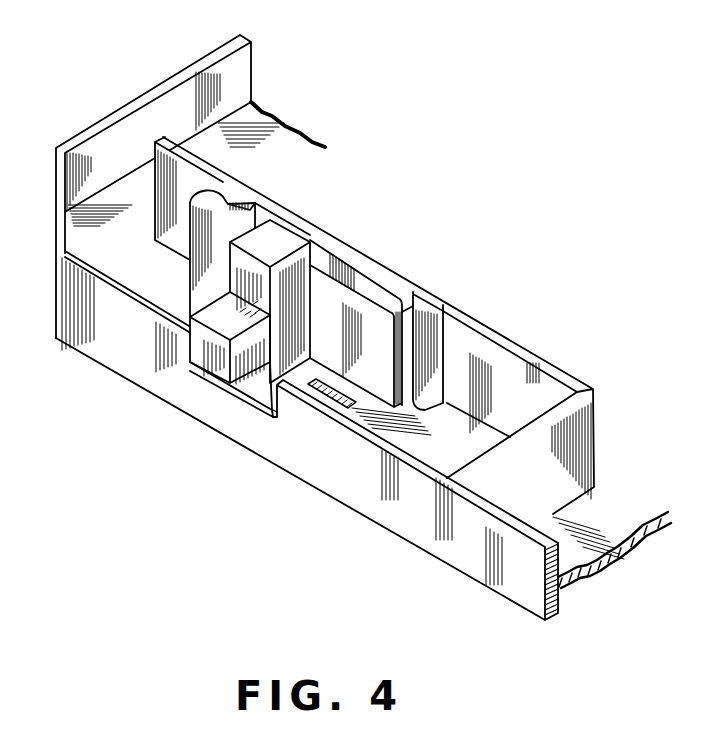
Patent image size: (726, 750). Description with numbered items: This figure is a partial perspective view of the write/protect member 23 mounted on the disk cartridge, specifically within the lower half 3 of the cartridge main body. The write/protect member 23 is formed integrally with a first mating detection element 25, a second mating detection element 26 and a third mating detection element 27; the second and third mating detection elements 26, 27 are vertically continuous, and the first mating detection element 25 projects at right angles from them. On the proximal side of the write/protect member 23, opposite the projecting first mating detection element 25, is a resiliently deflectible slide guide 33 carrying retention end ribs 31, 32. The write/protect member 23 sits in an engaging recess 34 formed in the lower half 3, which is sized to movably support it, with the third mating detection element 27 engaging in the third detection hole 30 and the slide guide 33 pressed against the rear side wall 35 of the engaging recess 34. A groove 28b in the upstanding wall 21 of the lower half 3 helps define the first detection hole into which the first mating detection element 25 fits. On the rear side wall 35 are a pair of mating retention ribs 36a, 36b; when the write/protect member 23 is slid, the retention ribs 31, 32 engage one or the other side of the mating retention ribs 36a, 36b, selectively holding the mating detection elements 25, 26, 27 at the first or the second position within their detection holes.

The lower half 3 is at (152, 120).
The upstanding wall 21 is at (112, 340).
The write/protect member 23 is at (243, 272).
The first mating detection element 25 is at (205, 356).
The second mating detection element 26 is at (272, 248).
The third mating detection element 27 is at (280, 370).
The groove 28b is at (258, 417).
The third detection hole 30 is at (330, 407).
The retention end rib 31 is at (237, 195).
The retention end rib 32 is at (427, 305).
The slide guide 33 is at (330, 298).
The engaging recess 34 is at (533, 395).
The rear side wall 35 is at (488, 332).
The mating retention rib 36a is at (210, 195).
The mating retention rib 36b is at (427, 303).